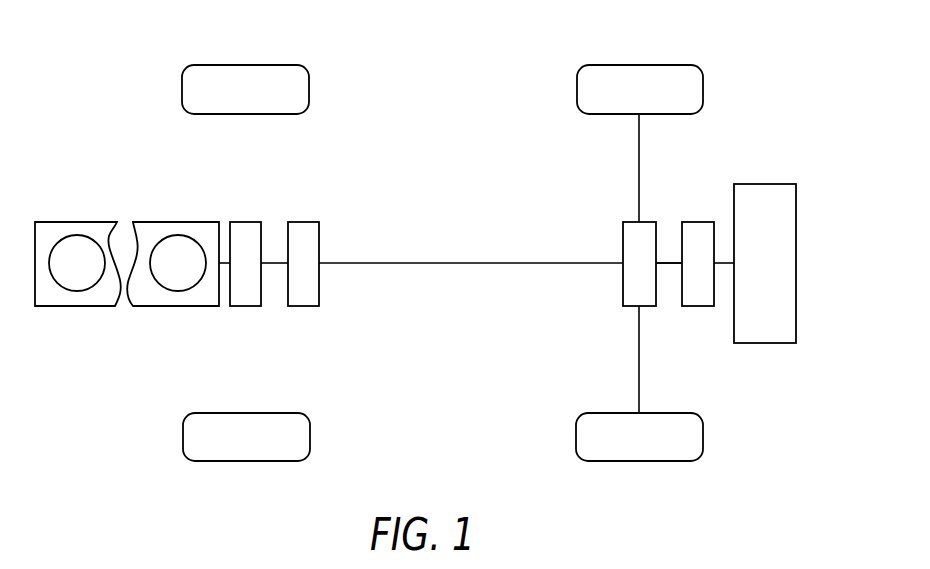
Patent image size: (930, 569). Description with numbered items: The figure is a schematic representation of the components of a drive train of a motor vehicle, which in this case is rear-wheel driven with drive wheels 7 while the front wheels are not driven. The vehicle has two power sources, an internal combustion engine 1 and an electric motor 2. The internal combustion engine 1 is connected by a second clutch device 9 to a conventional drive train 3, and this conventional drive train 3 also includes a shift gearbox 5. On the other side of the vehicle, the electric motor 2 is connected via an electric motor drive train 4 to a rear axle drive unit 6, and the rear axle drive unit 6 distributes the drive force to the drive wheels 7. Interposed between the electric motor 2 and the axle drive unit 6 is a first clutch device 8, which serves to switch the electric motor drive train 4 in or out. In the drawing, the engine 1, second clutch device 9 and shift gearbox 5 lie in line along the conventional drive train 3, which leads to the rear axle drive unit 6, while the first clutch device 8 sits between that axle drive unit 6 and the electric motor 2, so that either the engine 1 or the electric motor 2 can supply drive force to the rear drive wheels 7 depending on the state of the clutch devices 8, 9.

The internal combustion engine 1 is at (75, 268).
The electric motor 2 is at (762, 202).
The conventional drive train 3 is at (497, 265).
The electric motor drive train 4 is at (667, 257).
The shift gearbox 5 is at (310, 237).
The rear axle drive unit 6 is at (632, 232).
The drive wheels 7 is at (637, 80).
The first clutch device 8 is at (697, 233).
The second clutch device 9 is at (240, 233).